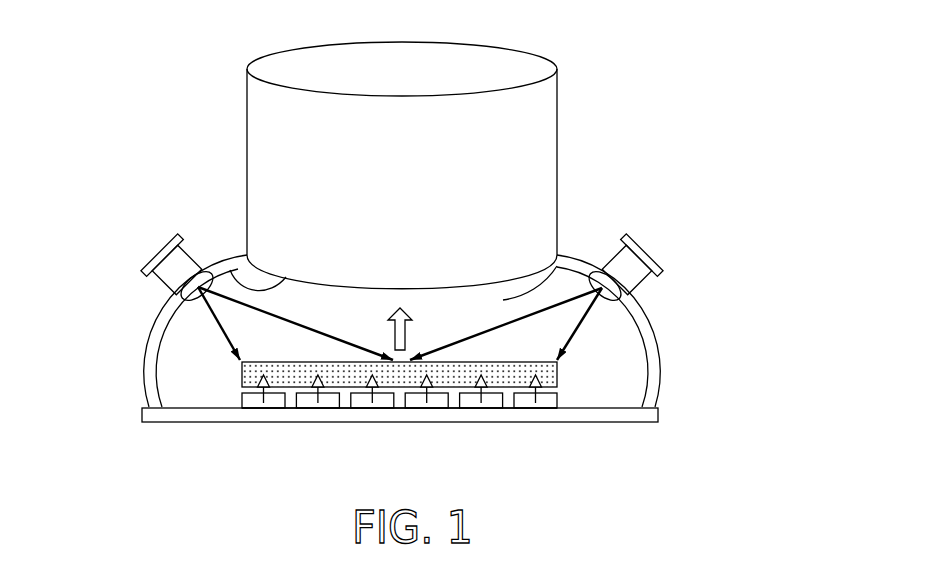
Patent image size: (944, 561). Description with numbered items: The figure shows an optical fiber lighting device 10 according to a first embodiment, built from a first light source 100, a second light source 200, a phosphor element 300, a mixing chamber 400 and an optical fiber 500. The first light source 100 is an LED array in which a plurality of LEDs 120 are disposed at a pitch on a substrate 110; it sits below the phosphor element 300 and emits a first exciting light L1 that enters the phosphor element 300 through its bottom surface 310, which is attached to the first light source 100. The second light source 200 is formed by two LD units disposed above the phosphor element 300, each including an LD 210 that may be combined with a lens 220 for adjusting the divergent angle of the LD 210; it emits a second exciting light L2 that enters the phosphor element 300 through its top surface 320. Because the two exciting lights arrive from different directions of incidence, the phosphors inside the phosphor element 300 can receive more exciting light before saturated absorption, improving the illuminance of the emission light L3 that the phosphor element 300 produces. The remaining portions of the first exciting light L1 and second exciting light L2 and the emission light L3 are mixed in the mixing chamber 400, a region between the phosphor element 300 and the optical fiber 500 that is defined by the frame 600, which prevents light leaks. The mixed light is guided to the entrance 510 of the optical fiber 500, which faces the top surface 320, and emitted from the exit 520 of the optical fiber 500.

The optical fiber lighting device 10 is at (63, 30).
The first light source 100 is at (250, 457).
The substrate 110 is at (188, 411).
The LEDs 120 is at (255, 403).
The second light source 200 is at (667, 232).
The LD 210 is at (168, 276).
The lens 220 is at (183, 298).
The phosphor element 300 is at (455, 368).
The bottom surface 310 is at (550, 390).
The top surface 320 is at (494, 366).
The mixing chamber 400 is at (562, 268).
The optical fiber 500 is at (535, 158).
The entrance 510 is at (230, 268).
The exit 520 is at (470, 45).
The frame 600 is at (155, 381).
The first exciting light L1 is at (537, 393).
The second exciting light L2 is at (597, 320).
The emission light L3 is at (414, 329).